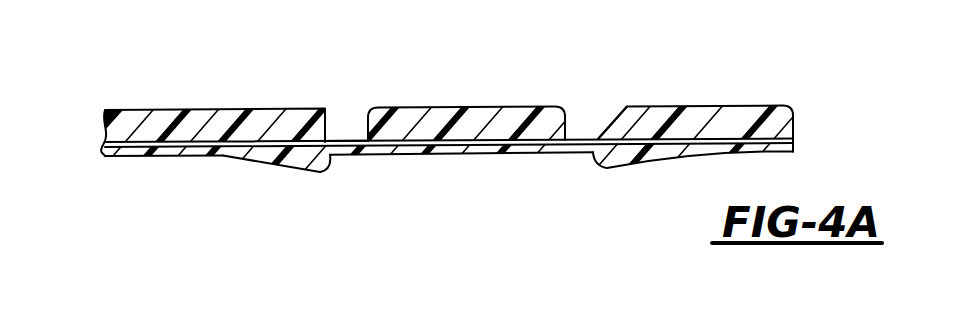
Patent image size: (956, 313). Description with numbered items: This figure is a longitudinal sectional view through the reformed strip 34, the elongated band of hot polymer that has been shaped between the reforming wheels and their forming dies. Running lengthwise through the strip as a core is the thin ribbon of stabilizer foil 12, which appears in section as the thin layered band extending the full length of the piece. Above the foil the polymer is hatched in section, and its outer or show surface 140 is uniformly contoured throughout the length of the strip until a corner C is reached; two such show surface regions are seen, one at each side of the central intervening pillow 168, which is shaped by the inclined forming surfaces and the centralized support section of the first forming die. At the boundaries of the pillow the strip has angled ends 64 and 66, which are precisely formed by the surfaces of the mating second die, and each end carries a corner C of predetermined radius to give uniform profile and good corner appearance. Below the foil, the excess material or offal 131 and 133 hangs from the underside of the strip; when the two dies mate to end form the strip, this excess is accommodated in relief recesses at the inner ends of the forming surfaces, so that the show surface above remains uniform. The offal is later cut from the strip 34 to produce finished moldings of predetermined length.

The reformed strip 34 is at (134, 106).
The show surface 140 is at (212, 110).
The corner C is at (327, 118).
The angled end 64 is at (340, 120).
The pillow 168 is at (482, 122).
The angled end 66 is at (614, 110).
The stabilizer foil 12 is at (798, 110).
The offal 131 is at (302, 163).
The offal 133 is at (607, 168).